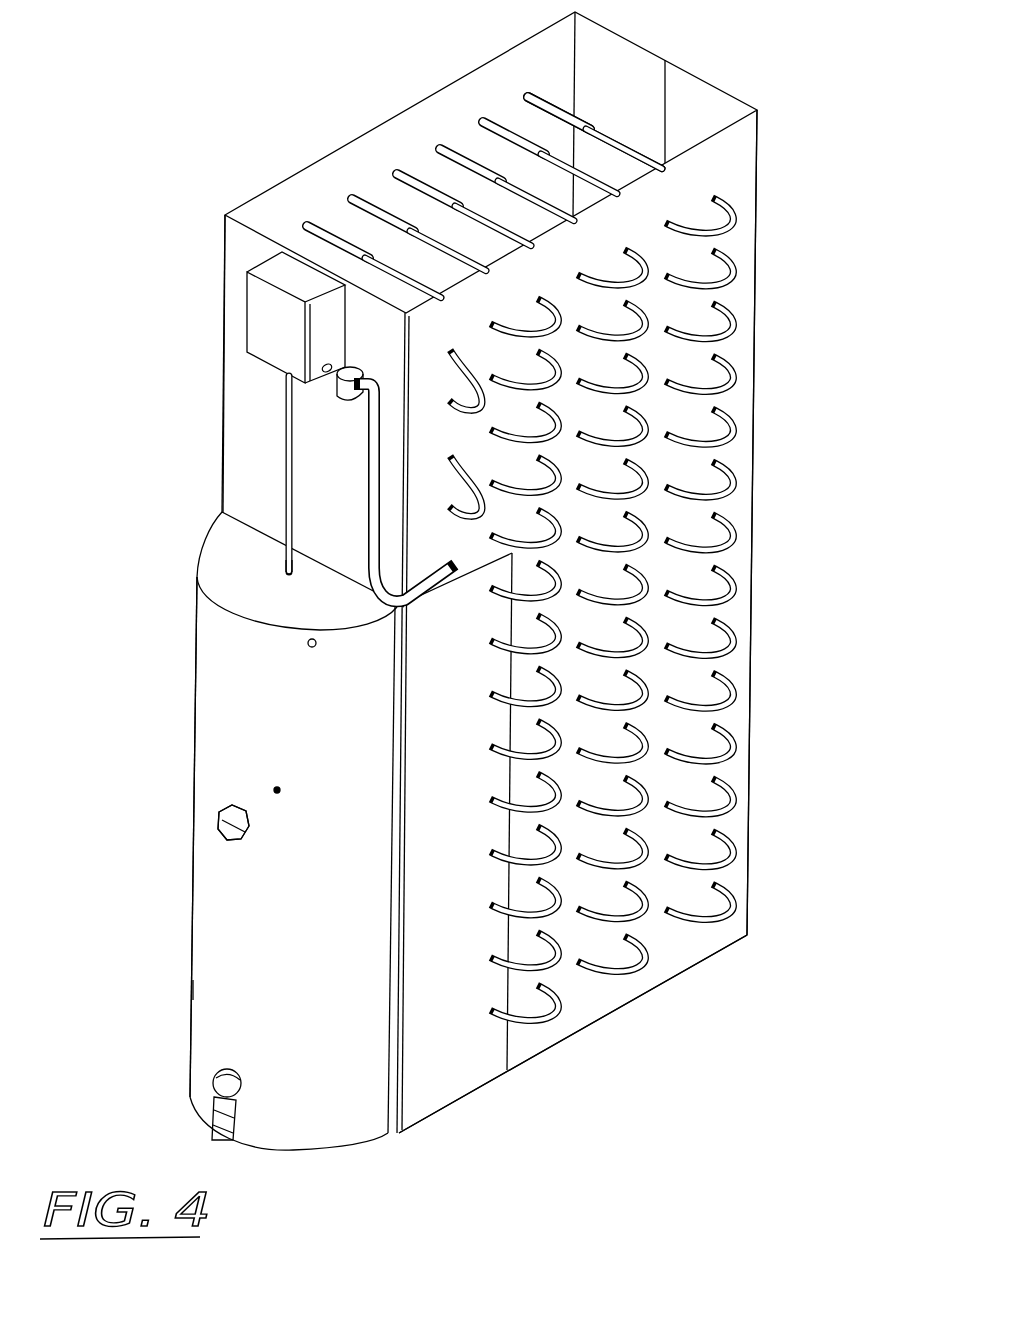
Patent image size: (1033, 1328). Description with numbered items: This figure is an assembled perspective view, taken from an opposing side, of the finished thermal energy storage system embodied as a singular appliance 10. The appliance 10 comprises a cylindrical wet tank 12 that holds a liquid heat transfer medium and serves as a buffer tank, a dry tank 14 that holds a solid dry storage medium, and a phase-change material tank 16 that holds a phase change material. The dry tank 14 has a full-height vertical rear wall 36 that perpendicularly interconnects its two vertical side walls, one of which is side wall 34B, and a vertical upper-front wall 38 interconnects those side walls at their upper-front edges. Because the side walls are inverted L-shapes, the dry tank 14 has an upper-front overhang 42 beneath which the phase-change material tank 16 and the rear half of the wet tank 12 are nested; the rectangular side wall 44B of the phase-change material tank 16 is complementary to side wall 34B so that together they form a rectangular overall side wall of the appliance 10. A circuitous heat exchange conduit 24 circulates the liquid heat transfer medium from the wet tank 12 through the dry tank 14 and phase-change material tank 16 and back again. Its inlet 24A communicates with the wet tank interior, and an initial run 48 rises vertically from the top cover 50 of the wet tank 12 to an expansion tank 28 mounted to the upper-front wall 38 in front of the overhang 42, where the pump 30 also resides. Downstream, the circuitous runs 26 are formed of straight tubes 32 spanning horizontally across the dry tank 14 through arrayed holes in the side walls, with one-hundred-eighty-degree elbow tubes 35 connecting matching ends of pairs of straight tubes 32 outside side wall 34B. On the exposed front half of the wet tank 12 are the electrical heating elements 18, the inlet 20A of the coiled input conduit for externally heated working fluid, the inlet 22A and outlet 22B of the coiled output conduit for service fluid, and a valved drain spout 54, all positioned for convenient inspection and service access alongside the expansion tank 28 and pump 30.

The appliance 10 is at (160, 185).
The wet tank 12 is at (220, 710).
The dry tank 14 is at (662, 951).
The phase-change material tank 16 is at (455, 1074).
The electrical heating element 18 is at (225, 833).
The inlet 20A is at (208, 818).
The inlet 22A is at (313, 648).
The outlet 22B is at (278, 792).
The circuitous heat exchange conduit 24 is at (221, 479).
The inlet 24A is at (284, 563).
The circuitous runs 26 is at (583, 127).
The expansion tank 28 is at (258, 310).
The pump 30 is at (353, 398).
The straight tubes 32 is at (418, 188).
The side wall 34B is at (740, 605).
The 180-degree elbow tubes 35 is at (717, 280).
The rear wall 36 is at (707, 122).
The upper-front wall 38 is at (268, 509).
The upper-front overhang 42 is at (247, 377).
The side wall 44B is at (462, 848).
The initial run 48 is at (285, 405).
The top cover 50 is at (337, 605).
The valved drain spout 54 is at (205, 1137).